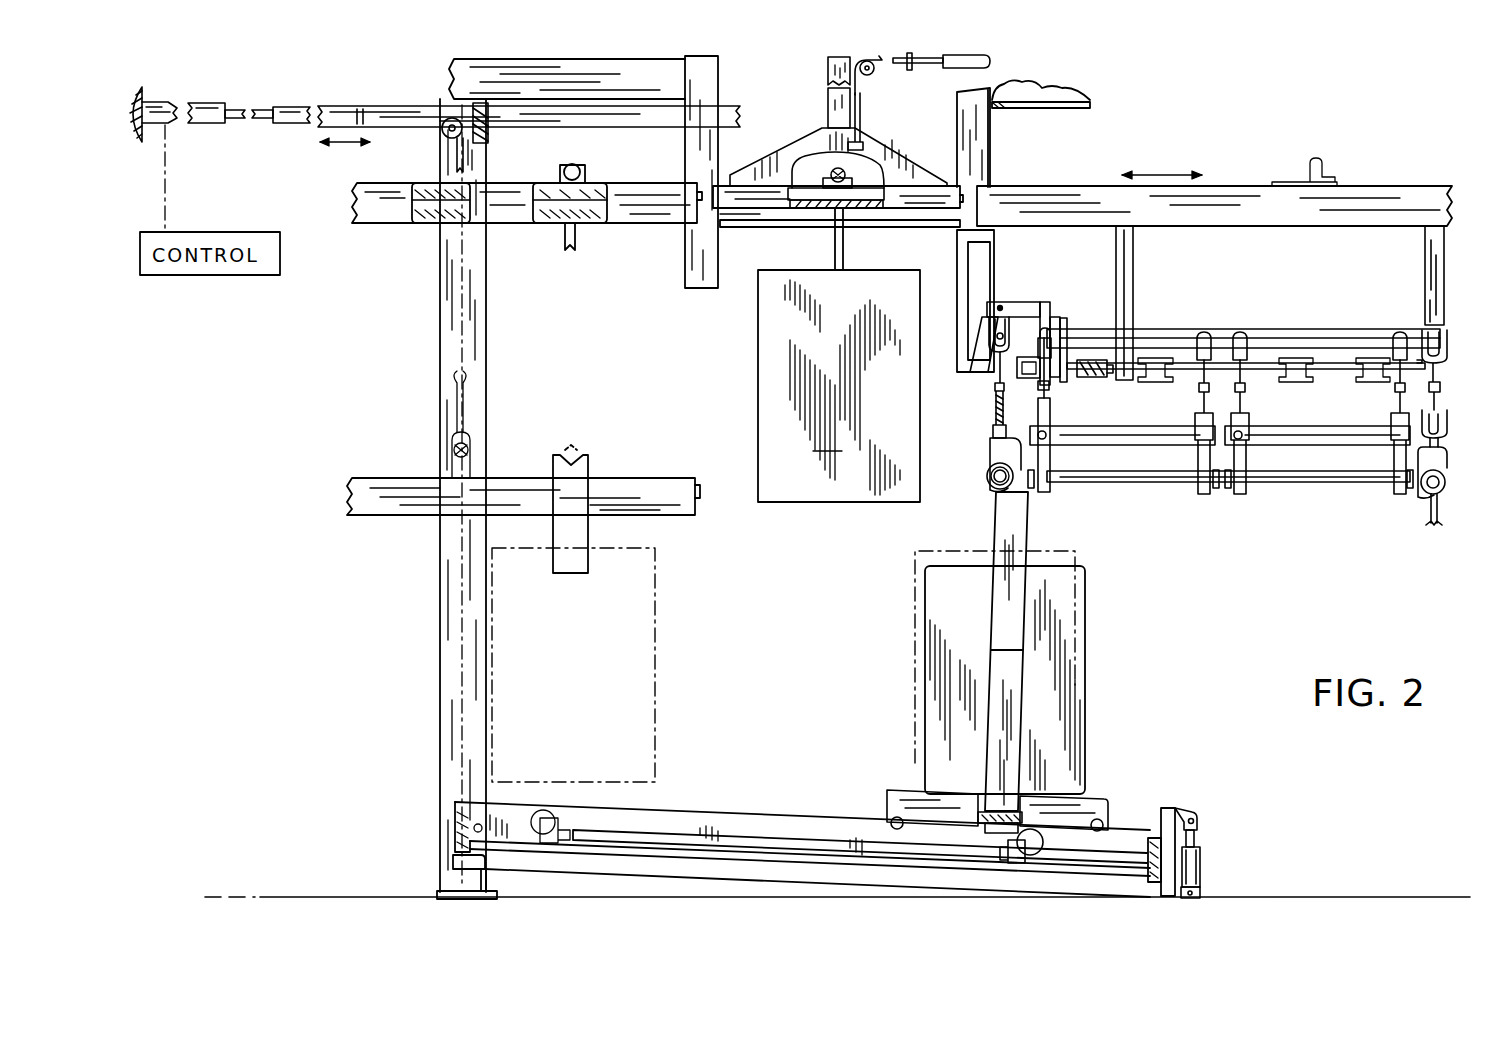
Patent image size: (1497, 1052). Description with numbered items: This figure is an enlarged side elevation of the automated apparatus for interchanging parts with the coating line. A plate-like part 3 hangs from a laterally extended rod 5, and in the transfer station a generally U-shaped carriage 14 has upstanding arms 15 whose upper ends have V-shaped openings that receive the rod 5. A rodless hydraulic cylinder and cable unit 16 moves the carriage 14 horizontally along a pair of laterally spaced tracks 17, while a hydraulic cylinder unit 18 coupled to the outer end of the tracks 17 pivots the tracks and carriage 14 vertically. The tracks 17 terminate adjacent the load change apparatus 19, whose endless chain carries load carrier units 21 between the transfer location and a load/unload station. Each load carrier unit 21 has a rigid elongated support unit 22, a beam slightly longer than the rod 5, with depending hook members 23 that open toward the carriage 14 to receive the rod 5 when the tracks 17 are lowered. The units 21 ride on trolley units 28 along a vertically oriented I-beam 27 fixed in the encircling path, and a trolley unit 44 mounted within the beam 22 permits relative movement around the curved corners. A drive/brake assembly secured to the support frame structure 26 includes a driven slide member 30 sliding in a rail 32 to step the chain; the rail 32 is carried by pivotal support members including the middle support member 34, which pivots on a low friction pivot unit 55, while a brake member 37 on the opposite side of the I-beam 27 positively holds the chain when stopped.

The part 3 is at (640, 682).
The rod 5 is at (995, 487).
The carriage 14 is at (1033, 528).
The arms 15 is at (1000, 587).
The rodless hydraulic cylinder and cable unit 16 is at (843, 816).
The tracks 17 is at (758, 818).
The hydraulic cylinder unit 18 is at (1208, 848).
The load change apparatus 19 is at (1256, 538).
The load carrier units 21 is at (983, 485).
The support unit 22 is at (993, 433).
The hook members 23 is at (1016, 464).
The support frame structure 26 is at (1133, 257).
The I-beam 27 is at (1353, 327).
The trolley units 28 is at (979, 335).
The driven slide member 30 is at (1030, 382).
The rail 32 is at (1045, 368).
The middle support member 34 is at (1060, 301).
The brake member 37 is at (978, 365).
The trolley unit 44 is at (1440, 416).
The low friction pivot unit 55 is at (1002, 306).